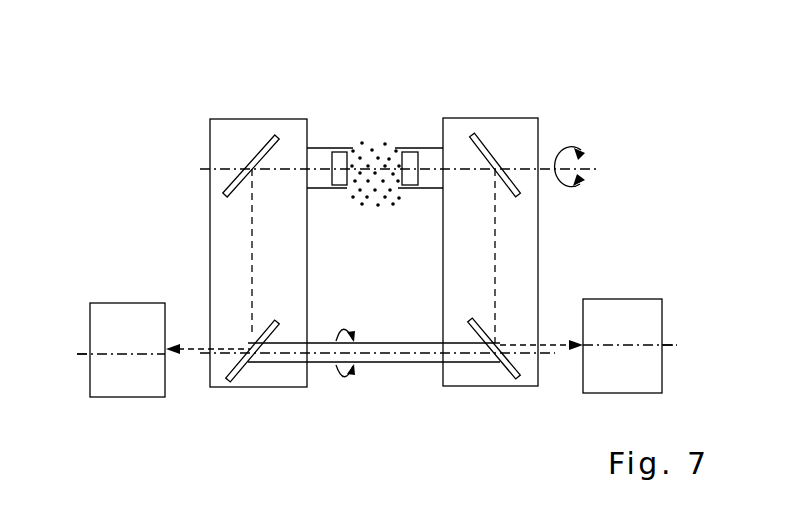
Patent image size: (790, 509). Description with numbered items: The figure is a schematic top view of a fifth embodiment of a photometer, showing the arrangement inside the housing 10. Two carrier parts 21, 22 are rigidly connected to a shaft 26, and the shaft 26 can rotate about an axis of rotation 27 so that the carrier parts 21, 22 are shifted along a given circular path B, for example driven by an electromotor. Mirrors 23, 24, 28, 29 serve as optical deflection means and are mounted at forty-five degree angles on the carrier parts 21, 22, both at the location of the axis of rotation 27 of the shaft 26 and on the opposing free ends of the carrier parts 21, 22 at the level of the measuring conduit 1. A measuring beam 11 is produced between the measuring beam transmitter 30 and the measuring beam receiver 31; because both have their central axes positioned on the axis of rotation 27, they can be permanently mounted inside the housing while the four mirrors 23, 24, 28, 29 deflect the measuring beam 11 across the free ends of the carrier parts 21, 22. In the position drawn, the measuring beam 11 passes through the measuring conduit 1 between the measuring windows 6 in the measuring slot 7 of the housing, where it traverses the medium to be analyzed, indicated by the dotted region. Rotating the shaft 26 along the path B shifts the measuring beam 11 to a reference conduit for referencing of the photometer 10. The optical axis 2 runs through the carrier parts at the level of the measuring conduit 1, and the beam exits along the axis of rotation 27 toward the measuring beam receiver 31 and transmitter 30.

The measuring conduit 1 is at (320, 189).
The optical axis 2 is at (200, 169).
The measuring windows 6 is at (340, 186).
The measuring slot 7 is at (375, 150).
The housing of the photometer 10 is at (396, 78).
The measuring beam 11 is at (420, 162).
The carrier part 21 is at (296, 257).
The carrier part 22 is at (481, 255).
The mirror 23 is at (482, 138).
The mirror 24 is at (510, 378).
The shaft 26 is at (421, 364).
The axis of rotation 27 is at (83, 354).
The mirror 28 is at (235, 382).
The mirror 29 is at (262, 140).
The measuring beam transmitter 30 is at (161, 334).
The measuring beam receiver 31 is at (656, 327).
The circular path B is at (565, 188).